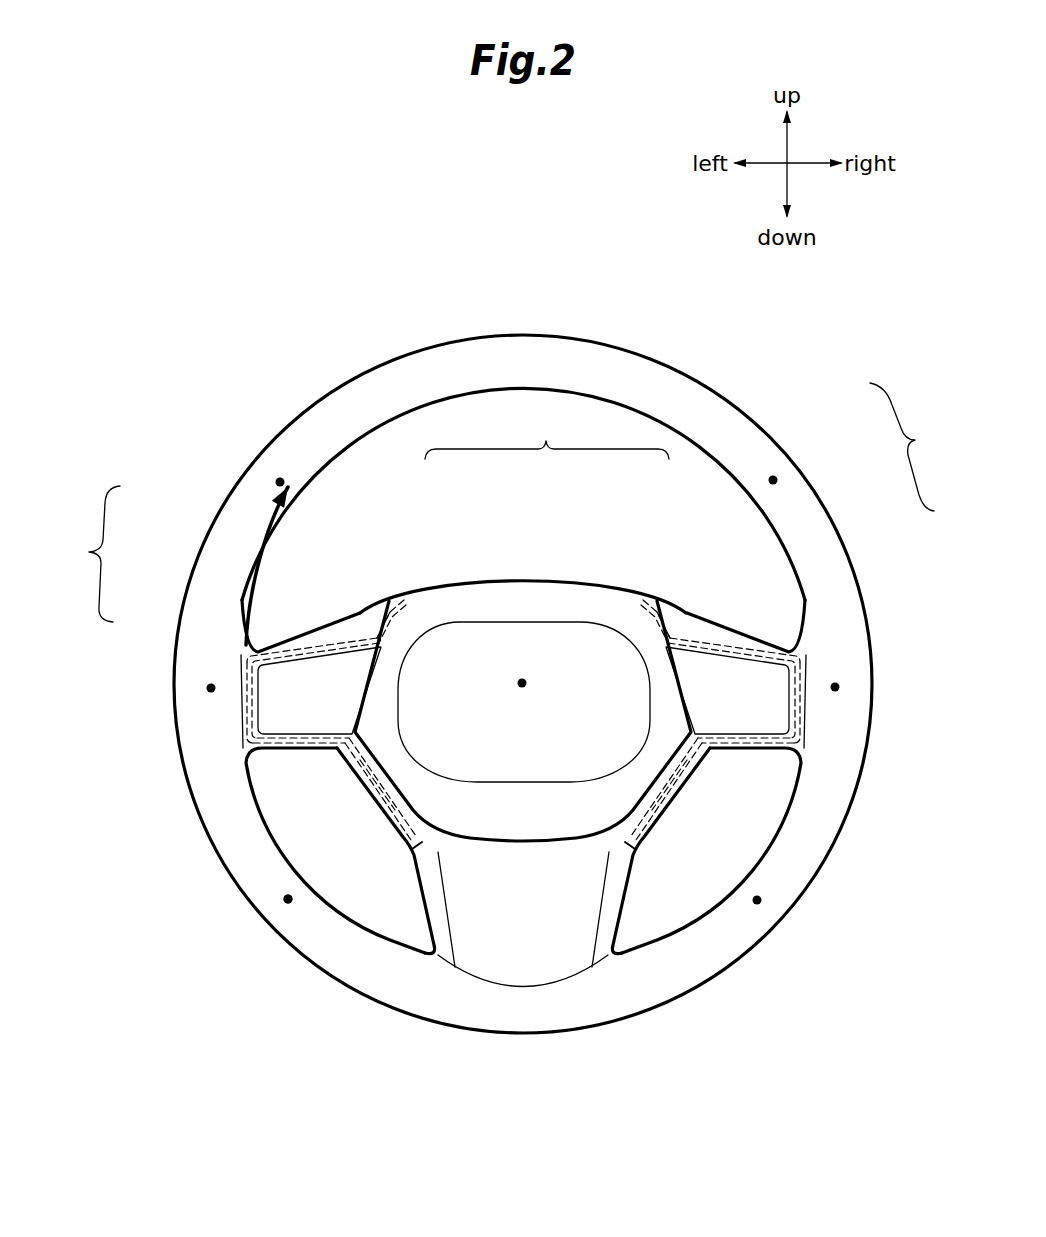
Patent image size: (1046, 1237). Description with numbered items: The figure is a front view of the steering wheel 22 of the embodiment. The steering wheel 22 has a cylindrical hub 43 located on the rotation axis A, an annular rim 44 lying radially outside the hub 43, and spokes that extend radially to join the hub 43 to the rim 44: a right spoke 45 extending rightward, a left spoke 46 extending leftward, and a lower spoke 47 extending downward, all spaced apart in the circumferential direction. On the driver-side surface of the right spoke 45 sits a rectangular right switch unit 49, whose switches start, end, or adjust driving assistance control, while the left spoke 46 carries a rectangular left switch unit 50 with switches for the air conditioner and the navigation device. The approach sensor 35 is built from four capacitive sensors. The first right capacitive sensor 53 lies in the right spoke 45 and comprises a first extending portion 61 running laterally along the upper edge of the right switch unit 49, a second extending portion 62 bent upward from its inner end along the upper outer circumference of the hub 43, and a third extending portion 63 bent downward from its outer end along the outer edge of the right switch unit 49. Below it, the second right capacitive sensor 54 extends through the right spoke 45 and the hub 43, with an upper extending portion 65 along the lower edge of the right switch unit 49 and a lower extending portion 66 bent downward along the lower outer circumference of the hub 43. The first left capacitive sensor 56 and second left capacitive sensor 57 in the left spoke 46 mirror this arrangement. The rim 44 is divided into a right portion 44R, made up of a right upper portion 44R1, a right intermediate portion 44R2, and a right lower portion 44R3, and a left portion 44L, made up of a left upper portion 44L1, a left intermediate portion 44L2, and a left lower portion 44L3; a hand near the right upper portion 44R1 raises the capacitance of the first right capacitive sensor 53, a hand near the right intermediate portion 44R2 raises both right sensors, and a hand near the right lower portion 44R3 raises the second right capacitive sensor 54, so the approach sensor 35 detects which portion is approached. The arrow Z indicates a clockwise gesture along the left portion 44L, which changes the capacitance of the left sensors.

The steering wheel 22 is at (658, 340).
The rim 44 is at (348, 376).
The left portion of the rim 44L is at (166, 691).
The left upper portion of the rim 44L1 is at (276, 483).
The left intermediate portion of the rim 44L2 is at (211, 684).
The left lower portion of the rim 44L3 is at (285, 898).
The right portion of the rim 44R is at (857, 644).
The right upper portion of the rim 44R1 is at (775, 477).
The right intermediate portion of the rim 44R2 is at (835, 683).
The right lower portion of the rim 44R3 is at (760, 899).
The approach sensor 35 is at (527, 610).
The first right capacitive sensor 53 is at (691, 632).
The second right capacitive sensor 54 is at (652, 787).
The first left capacitive sensor 56 is at (362, 632).
The second left capacitive sensor 57 is at (388, 780).
The left spoke 46 is at (344, 612).
The right spoke 45 is at (750, 630).
The hub 43 is at (702, 770).
The lower spoke 47 is at (622, 917).
The right switch unit 49 is at (713, 653).
The left switch unit 50 is at (315, 668).
The first extending portion 61 is at (327, 640).
The second extending portion 62 is at (384, 590).
The third extending portion 63 is at (257, 630).
The upper extending portion 65 is at (298, 750).
The lower extending portion 66 is at (388, 805).
The rotation axis A is at (524, 678).
The arrow Z is at (301, 906).